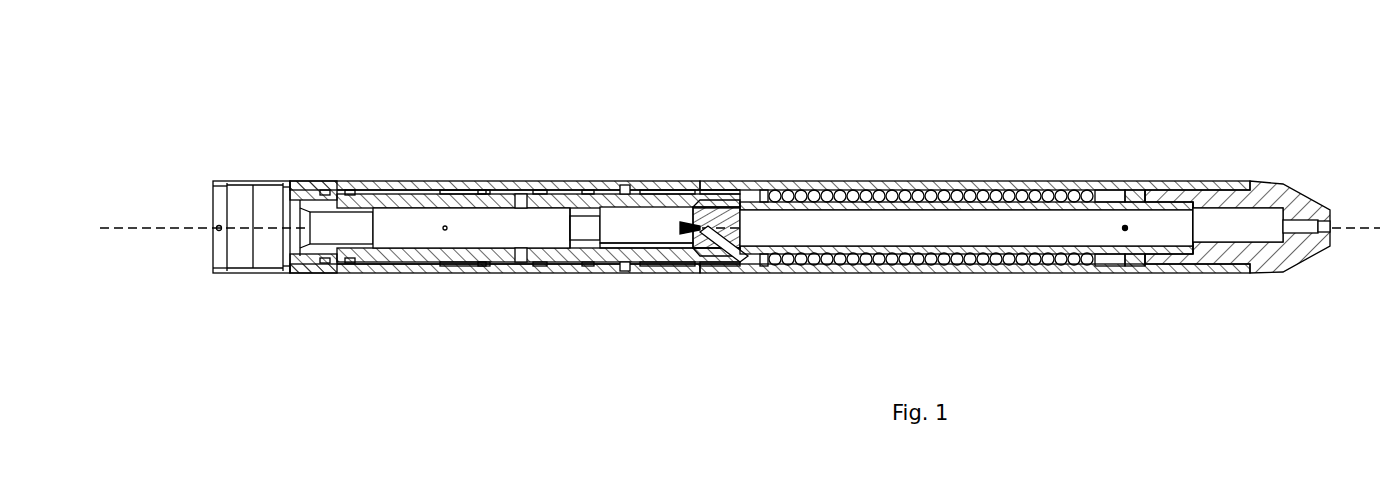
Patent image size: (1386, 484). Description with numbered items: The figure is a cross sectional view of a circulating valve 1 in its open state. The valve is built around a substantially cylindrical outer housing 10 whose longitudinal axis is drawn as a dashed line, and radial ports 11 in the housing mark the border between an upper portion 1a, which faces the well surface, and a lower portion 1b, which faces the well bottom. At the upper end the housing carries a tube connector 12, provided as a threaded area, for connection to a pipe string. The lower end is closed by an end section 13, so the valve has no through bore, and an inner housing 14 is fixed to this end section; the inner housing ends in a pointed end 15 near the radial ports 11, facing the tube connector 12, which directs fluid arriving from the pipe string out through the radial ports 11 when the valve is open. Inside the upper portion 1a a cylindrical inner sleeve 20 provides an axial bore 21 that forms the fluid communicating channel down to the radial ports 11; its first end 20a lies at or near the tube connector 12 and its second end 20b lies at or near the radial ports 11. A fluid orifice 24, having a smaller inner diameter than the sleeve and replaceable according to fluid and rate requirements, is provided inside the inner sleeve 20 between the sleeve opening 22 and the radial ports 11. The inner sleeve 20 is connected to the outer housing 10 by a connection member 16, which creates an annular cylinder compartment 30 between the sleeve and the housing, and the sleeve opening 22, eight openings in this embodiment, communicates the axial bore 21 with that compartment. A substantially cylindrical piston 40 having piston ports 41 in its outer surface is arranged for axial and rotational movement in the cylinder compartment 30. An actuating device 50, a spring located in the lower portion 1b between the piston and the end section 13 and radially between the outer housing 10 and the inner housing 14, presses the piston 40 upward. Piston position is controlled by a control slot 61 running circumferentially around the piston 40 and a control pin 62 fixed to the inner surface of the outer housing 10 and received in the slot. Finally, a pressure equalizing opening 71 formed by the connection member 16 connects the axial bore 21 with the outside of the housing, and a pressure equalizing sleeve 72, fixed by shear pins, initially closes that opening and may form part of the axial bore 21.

The circulating valve 1 is at (289, 333).
The upper portion 1a is at (427, 113).
The lower portion 1b is at (1088, 142).
The outer housing 10 is at (878, 181).
The radial ports 11 is at (723, 181).
The tube connector 12 is at (238, 251).
The end section 13 is at (1290, 250).
The inner housing 14 is at (1130, 270).
The pointed end 15 is at (750, 262).
The connection member 16 is at (482, 181).
The inner sleeve 20 is at (632, 262).
The first end 20a is at (455, 182).
The second end 20b is at (676, 190).
The axial bore 21 is at (458, 246).
The sleeve opening 22 is at (540, 181).
The fluid orifice 24 is at (583, 230).
The cylinder compartment 30 is at (520, 194).
The piston 40 is at (605, 252).
The piston ports 41 is at (712, 181).
The actuating device 50 is at (972, 181).
The control slot 61 is at (588, 181).
The control pin 62 is at (625, 185).
The pressure equalizing opening 71 is at (330, 181).
The pressure equalizing sleeve 72 is at (352, 181).